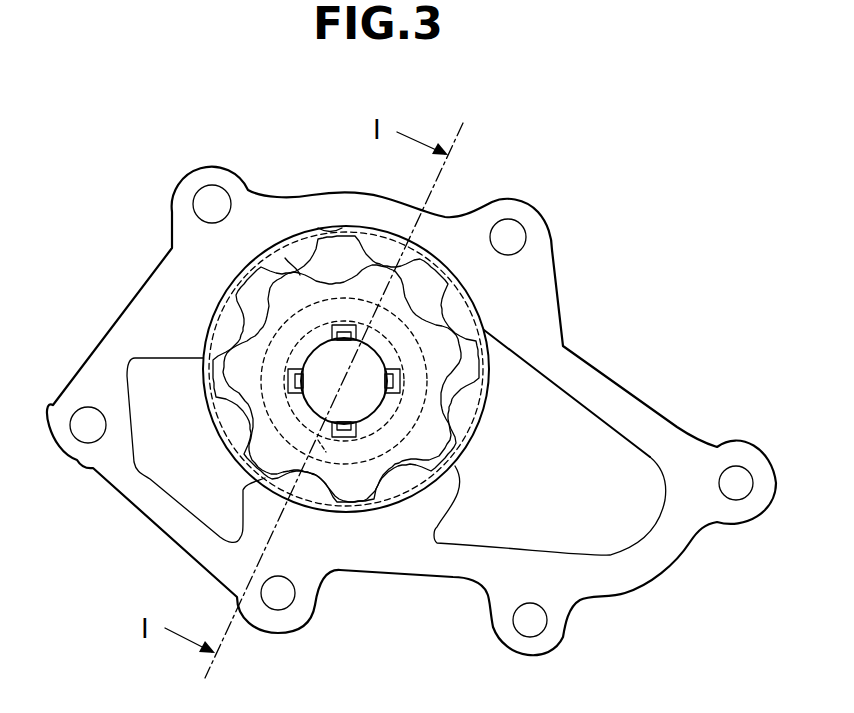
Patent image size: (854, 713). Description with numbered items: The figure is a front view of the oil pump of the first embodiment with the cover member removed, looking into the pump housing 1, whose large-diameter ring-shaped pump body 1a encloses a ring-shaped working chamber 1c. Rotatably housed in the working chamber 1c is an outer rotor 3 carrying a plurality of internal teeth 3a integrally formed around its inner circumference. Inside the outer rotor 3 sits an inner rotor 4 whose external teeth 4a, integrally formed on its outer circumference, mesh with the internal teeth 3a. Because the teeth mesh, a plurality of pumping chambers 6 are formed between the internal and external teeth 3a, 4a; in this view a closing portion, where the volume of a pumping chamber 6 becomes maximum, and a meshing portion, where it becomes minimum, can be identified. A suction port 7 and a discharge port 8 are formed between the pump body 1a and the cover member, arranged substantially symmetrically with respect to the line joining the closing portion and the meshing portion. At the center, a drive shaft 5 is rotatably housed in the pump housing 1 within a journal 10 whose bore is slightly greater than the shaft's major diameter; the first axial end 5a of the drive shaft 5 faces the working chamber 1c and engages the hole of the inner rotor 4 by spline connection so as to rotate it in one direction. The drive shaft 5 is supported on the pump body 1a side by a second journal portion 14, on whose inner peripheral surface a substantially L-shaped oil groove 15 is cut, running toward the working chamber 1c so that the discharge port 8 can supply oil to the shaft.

The pump housing 1 is at (411, 396).
The pump body 1a is at (530, 263).
The working chamber 1c is at (330, 228).
The outer rotor 3 is at (432, 319).
The internal teeth 3a is at (480, 317).
The inner rotor 4 is at (461, 441).
The external teeth 4a is at (353, 483).
The drive shaft 5 is at (386, 310).
The first axial end 5a is at (363, 377).
The pumping chambers 6 is at (295, 267).
The suction port 7 is at (620, 467).
The discharge port 8 is at (178, 475).
The journal 10 is at (372, 494).
The second journal portion 14 is at (382, 430).
The oil groove 15 is at (322, 445).